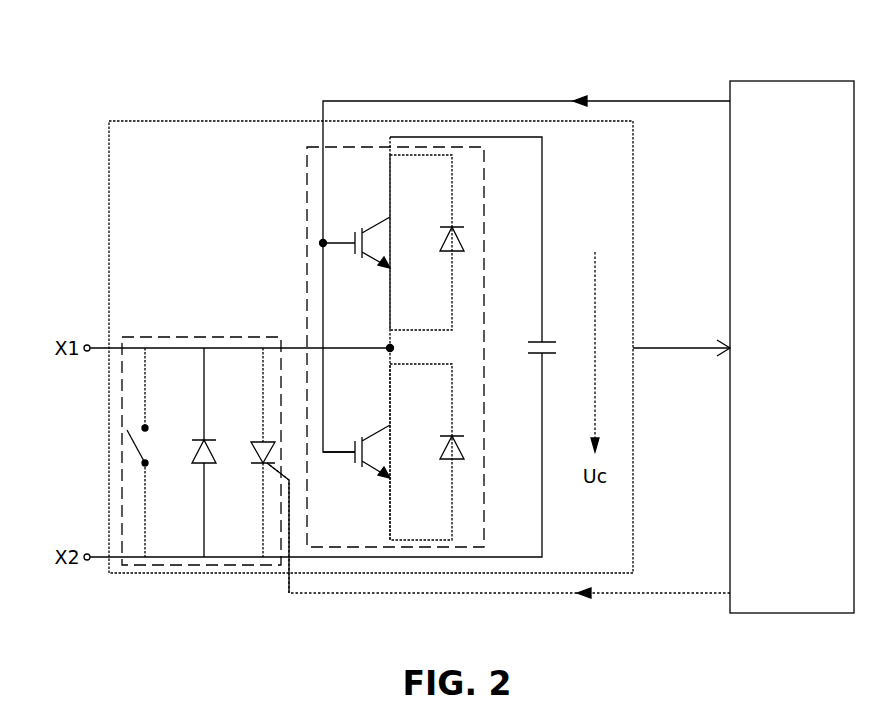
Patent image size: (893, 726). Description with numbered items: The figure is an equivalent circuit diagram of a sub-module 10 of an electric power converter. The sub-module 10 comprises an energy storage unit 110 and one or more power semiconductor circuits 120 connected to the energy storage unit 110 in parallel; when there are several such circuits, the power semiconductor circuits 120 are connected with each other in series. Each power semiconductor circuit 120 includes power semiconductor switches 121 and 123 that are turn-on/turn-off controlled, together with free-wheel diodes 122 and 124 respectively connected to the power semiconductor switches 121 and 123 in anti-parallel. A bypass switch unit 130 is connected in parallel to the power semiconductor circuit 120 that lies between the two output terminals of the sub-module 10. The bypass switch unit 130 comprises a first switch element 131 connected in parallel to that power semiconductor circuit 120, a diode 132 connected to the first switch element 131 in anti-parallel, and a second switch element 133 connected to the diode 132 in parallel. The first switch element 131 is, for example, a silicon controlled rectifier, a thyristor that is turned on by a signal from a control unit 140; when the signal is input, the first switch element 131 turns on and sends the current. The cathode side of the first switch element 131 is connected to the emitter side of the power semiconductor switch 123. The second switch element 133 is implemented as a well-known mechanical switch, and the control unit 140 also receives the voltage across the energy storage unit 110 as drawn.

The sub-module 10 is at (204, 121).
The energy storage unit 110 is at (543, 341).
The power semiconductor circuit 120 is at (307, 200).
The power semiconductor switch 121 is at (357, 232).
The free-wheel diode 122 is at (462, 239).
The power semiconductor switch 123 is at (355, 464).
The free-wheel diode 124 is at (462, 447).
The bypass switch unit 130 is at (163, 337).
The first switch element 131 is at (259, 468).
The diode 132 is at (202, 440).
The second switch element 133 is at (147, 465).
The control unit 140 is at (790, 81).